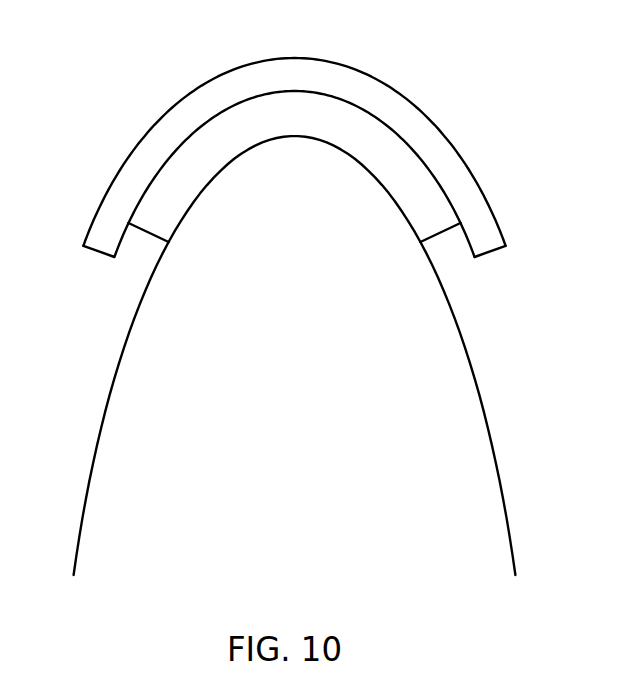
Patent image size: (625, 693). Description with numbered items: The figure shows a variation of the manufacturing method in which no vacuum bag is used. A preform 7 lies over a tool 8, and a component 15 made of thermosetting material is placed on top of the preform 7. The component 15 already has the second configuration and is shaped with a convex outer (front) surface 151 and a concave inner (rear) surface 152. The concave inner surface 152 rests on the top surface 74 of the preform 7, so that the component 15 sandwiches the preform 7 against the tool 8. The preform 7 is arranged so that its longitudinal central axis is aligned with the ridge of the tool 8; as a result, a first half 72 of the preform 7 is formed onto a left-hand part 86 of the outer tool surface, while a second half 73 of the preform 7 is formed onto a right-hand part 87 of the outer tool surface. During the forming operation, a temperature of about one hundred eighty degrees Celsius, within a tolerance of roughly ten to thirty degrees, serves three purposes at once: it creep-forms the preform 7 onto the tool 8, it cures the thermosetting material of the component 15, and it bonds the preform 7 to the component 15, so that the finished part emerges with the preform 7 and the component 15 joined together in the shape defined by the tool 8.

The preform 7 is at (398, 165).
The first half of the preform 72 is at (165, 195).
The second half of the preform 73 is at (423, 195).
The top surface of the preform 74 is at (353, 103).
The tool 8 is at (292, 355).
The left-hand part of the outer tool surface 86 is at (87, 490).
The right-hand part of the outer tool surface 87 is at (507, 525).
The component 15 is at (320, 176).
The convex outer surface 151 is at (497, 216).
The concave inner surface 152 is at (469, 247).